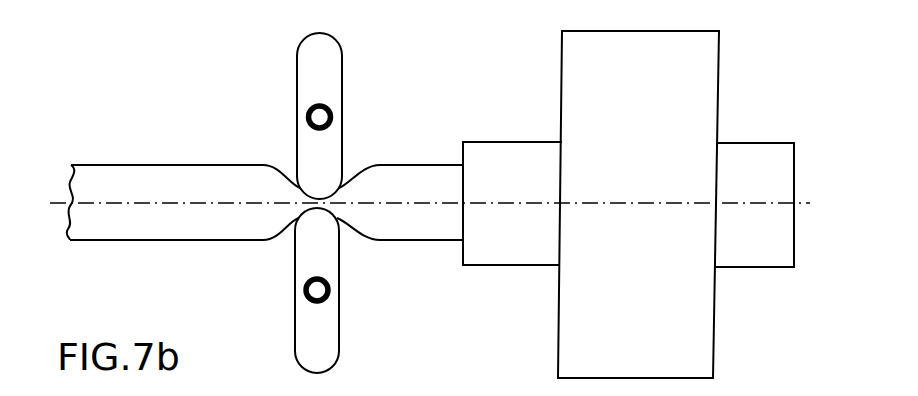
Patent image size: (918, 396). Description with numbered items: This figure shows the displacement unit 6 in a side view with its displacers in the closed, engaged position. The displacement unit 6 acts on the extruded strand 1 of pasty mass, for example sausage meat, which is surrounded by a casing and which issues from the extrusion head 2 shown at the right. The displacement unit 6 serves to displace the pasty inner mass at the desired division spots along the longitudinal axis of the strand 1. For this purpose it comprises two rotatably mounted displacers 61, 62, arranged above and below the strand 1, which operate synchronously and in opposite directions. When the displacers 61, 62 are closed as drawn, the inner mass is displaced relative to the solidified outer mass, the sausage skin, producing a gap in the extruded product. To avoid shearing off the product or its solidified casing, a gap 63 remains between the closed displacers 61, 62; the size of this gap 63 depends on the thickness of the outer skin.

The strand 1 is at (128, 184).
The extrusion head 2 is at (700, 82).
The displacement unit 6 is at (420, 67).
The displacer 61 is at (308, 87).
The displacer 62 is at (300, 332).
The gap 63 is at (318, 205).